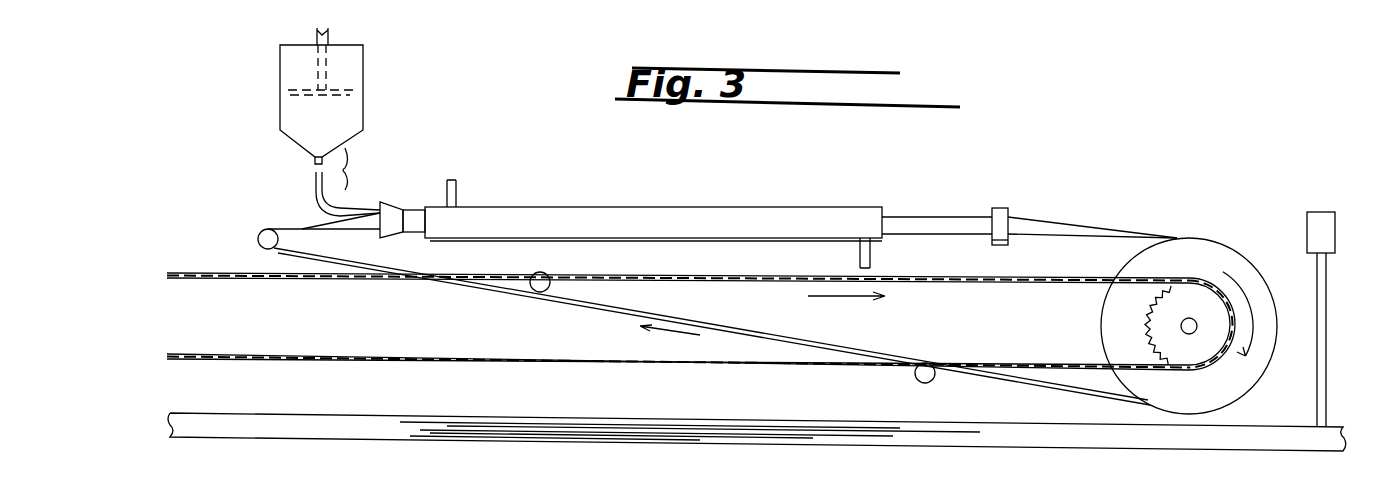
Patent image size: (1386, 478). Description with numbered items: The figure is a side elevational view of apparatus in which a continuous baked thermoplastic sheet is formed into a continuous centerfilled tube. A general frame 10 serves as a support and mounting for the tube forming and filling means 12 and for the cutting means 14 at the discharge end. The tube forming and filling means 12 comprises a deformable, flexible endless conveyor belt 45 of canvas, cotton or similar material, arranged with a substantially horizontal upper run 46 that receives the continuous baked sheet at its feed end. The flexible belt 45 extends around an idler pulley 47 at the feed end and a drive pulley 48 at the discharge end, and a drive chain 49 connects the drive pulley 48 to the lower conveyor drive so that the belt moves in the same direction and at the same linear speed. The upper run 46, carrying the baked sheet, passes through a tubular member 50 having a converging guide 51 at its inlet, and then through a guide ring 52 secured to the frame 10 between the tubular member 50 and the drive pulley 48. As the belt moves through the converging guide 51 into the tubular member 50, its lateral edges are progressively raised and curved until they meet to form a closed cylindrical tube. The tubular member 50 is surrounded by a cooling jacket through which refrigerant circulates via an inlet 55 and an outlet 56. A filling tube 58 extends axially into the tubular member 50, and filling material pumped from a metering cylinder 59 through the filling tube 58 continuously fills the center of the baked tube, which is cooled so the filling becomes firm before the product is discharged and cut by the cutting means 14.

The general frame 10 is at (822, 411).
The tube forming and filling means 12 is at (771, 193).
The cutting means 14 is at (1320, 210).
The deformable flexible endless conveyor belt 45 is at (323, 260).
The upper run 46 is at (296, 228).
The idler pulley 47 is at (258, 236).
The drive pulley 48 is at (1255, 275).
The drive chain 49 is at (253, 281).
The tubular member 50 is at (664, 206).
The converging guide 51 is at (394, 210).
The guide ring 52 is at (1008, 210).
The inlet 55 is at (458, 183).
The outlet 56 is at (873, 253).
The filling tube 58 is at (313, 183).
The metering cylinder 59 is at (356, 103).